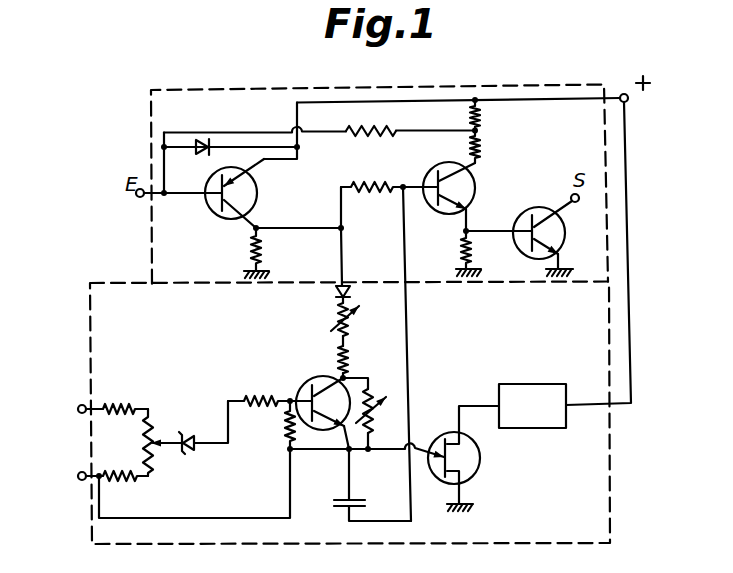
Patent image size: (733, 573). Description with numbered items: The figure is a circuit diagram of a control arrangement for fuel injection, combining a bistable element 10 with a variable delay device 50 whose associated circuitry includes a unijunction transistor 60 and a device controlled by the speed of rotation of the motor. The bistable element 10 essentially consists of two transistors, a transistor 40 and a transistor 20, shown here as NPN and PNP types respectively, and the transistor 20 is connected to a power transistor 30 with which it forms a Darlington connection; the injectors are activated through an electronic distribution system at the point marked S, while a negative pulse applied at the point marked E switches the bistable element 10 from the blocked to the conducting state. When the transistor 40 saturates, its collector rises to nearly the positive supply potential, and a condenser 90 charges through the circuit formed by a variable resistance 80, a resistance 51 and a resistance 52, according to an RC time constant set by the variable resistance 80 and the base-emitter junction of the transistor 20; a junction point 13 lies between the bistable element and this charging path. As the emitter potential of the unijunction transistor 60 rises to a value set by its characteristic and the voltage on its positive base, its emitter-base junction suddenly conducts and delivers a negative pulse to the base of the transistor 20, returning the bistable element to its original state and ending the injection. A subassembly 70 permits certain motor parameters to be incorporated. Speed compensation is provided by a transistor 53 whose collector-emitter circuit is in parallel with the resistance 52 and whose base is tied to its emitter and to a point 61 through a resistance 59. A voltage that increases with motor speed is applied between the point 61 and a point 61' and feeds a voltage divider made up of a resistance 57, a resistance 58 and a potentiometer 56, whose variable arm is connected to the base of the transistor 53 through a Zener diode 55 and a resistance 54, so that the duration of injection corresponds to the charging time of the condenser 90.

The bistable element 10 is at (379, 184).
The junction node 13 is at (341, 228).
The transistor 20 is at (473, 194).
The power transistor 30 is at (561, 245).
The transistor 40 is at (256, 195).
The variable delay device 50 is at (350, 413).
The resistance 51 is at (355, 357).
The resistance 52 is at (377, 413).
The transistor 53 is at (320, 376).
The resistance 54 is at (259, 388).
The Zener diode 55 is at (187, 431).
The potentiometer 56 is at (143, 443).
The resistance 57 is at (126, 404).
The resistance 58 is at (126, 480).
The resistance 59 is at (284, 431).
The unijunction transistor 60 is at (485, 461).
The point 61 is at (76, 476).
The point 61' is at (67, 410).
The subassembly 70 is at (533, 383).
The variable resistance 80 is at (331, 315).
The condenser 90 is at (368, 489).